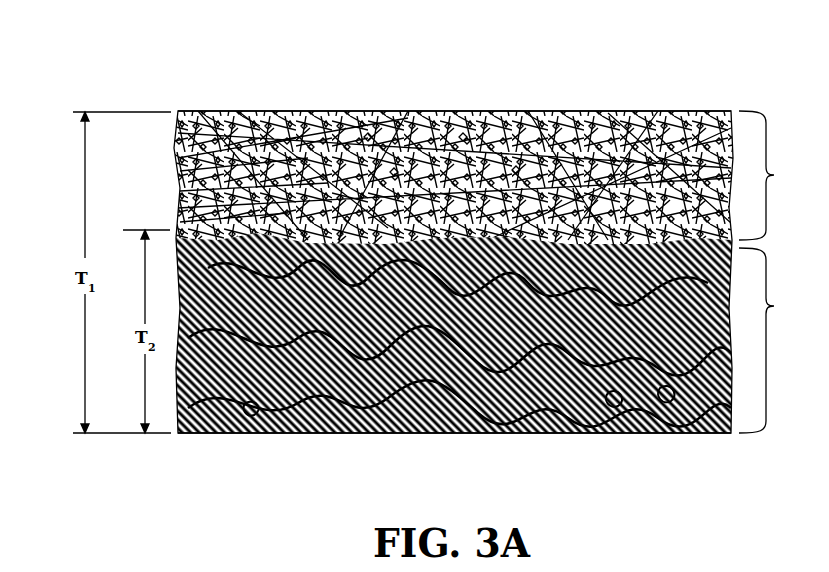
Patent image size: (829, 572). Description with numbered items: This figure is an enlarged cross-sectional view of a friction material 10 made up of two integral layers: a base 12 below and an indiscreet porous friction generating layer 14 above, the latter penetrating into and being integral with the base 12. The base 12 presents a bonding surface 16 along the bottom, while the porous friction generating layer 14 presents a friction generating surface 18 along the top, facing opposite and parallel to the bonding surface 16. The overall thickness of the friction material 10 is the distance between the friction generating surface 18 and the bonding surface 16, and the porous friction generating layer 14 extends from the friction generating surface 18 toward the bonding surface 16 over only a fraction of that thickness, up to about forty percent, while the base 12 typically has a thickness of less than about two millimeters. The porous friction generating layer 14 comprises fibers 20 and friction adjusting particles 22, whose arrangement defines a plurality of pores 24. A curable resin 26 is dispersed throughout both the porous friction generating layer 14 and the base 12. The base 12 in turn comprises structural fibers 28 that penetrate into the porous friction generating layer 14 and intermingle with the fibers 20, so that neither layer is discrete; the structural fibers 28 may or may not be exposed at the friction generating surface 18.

The friction material 10 is at (103, 73).
The base 12 is at (486, 335).
The porous friction generating layer 14 is at (486, 178).
The bonding surface 16 is at (507, 428).
The friction generating surface 18 is at (615, 103).
The fibers 20 is at (170, 214).
The friction adjusting particles 22 is at (388, 160).
The pores 24 is at (510, 160).
The curable resin 26 is at (655, 387).
The structural fibers 28 is at (246, 405).